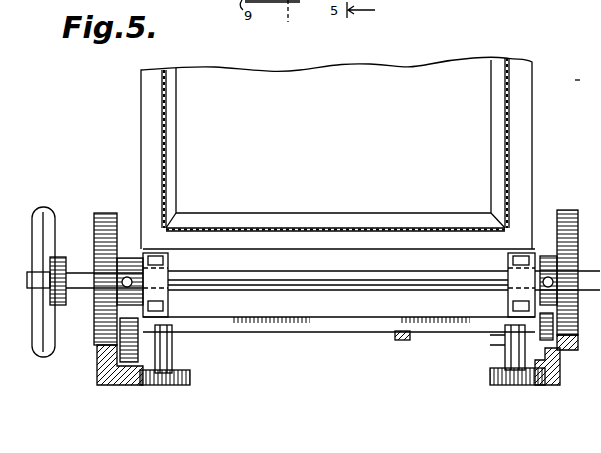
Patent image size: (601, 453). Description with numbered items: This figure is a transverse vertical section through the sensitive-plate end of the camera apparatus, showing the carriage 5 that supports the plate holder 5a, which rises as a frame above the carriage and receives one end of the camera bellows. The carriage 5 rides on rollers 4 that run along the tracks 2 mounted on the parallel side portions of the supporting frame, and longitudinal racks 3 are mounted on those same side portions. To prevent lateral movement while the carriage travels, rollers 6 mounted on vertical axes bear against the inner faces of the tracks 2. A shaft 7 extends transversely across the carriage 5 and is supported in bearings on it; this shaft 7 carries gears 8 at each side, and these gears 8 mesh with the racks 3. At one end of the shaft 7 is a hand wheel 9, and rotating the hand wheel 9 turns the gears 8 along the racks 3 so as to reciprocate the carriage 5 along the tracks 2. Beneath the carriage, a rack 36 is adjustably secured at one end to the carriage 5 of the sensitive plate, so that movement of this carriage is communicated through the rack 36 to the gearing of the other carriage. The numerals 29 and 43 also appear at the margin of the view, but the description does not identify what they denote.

The plate holder 5a is at (163, 118).
The carriage 5 is at (334, 324).
The shaft 7 is at (285, 271).
The hand wheel 9 is at (43, 357).
The gears 8 is at (103, 213).
The rollers 4 is at (133, 320).
The longitudinal racks 3 is at (100, 355).
The rollers 6 is at (190, 378).
The tracks 2 is at (550, 386).
The rack 36 is at (403, 341).
The member 29 is at (587, 71).
The member 43 is at (600, 0).